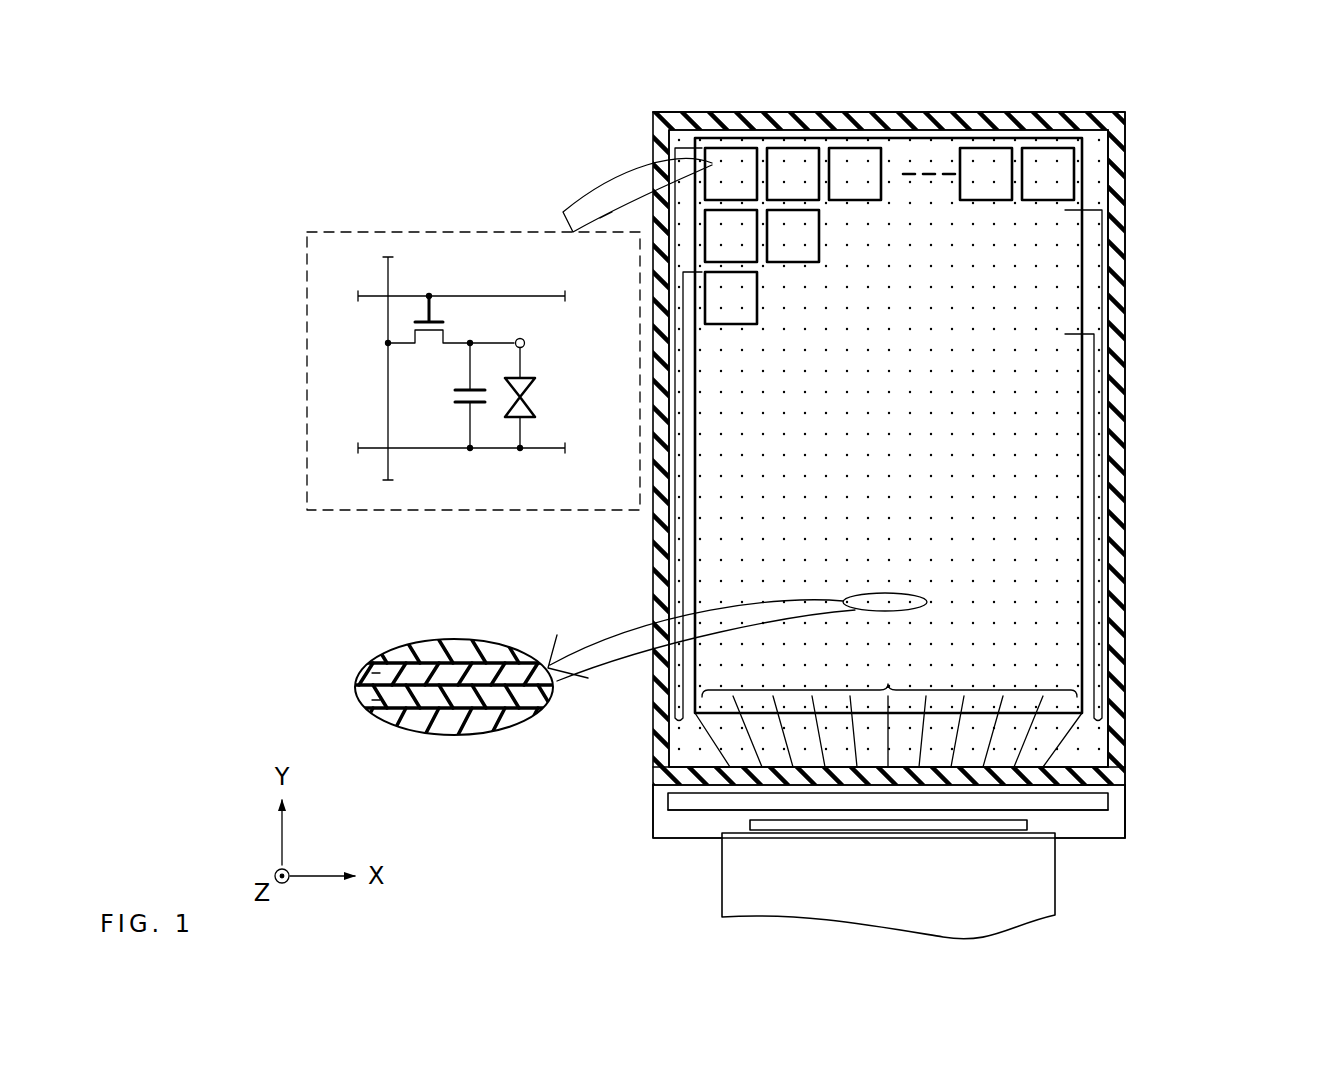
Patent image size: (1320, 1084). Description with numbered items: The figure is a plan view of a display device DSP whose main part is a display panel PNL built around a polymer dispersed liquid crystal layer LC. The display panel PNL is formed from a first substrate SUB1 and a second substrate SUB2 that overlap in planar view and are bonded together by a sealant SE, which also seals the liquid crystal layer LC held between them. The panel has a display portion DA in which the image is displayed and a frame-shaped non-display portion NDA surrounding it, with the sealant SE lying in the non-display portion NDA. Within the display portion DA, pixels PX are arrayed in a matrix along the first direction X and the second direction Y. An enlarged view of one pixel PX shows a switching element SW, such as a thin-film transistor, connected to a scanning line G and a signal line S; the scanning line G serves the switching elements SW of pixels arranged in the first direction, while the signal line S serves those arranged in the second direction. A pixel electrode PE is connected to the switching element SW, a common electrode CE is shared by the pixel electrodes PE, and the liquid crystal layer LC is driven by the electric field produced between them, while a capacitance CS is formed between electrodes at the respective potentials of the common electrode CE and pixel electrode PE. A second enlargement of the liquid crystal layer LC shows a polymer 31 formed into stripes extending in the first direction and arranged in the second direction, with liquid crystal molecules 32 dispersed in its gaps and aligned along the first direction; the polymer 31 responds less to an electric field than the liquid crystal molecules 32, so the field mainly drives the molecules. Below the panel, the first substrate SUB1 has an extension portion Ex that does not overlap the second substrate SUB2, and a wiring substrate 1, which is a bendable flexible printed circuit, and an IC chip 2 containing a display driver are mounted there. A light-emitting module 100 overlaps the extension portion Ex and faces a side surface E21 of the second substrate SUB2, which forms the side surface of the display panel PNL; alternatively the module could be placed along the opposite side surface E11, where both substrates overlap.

The display device DSP is at (1212, 158).
The display panel PNL is at (1129, 106).
The side surface E11 is at (929, 107).
The side surface E21 is at (1028, 792).
The pixel PX is at (845, 148).
The scanning line G is at (368, 295).
The signal line S is at (388, 380).
The switching element SW is at (460, 330).
The pixel electrode PE is at (528, 343).
The capacitance CS is at (452, 400).
The liquid crystal layer LC is at (540, 396).
The common electrode CE is at (540, 450).
The display portion DA is at (1088, 520).
The non-display portion NDA is at (1124, 577).
The sealant SE is at (1110, 668).
The first substrate SUB1 is at (1123, 813).
The second substrate SUB2 is at (1123, 778).
The extension portion Ex is at (655, 826).
The polymer 31 is at (372, 700).
The liquid crystal molecules 32 is at (445, 709).
The wiring substrate 1 is at (722, 912).
The IC chip 2 is at (822, 831).
The light-emitting module 100 is at (875, 812).